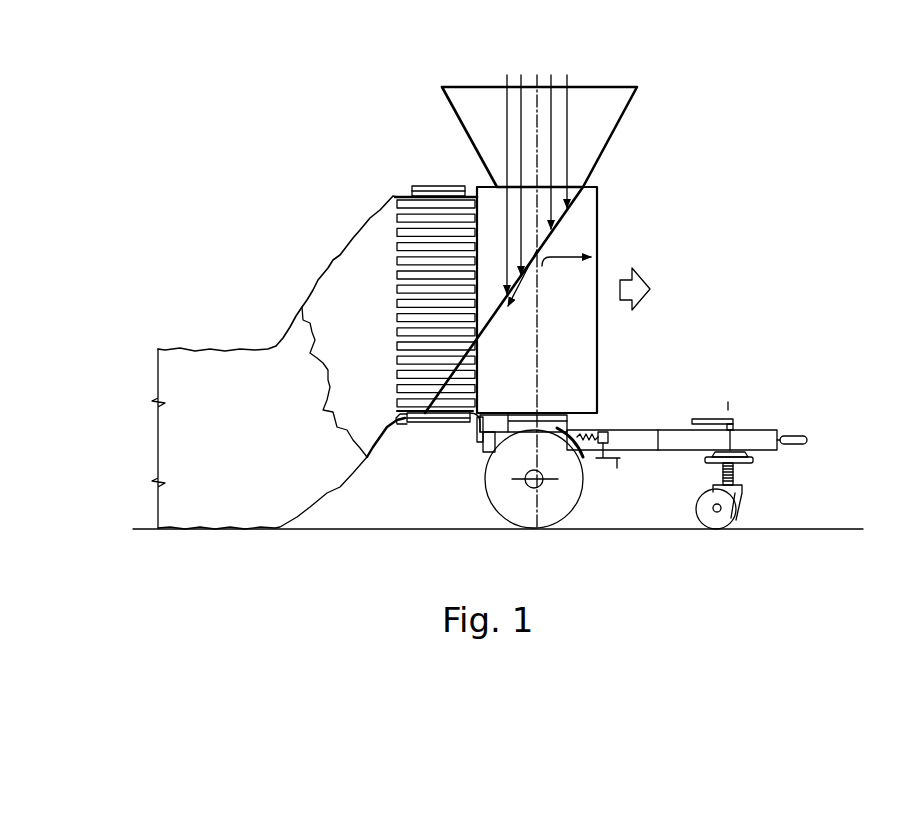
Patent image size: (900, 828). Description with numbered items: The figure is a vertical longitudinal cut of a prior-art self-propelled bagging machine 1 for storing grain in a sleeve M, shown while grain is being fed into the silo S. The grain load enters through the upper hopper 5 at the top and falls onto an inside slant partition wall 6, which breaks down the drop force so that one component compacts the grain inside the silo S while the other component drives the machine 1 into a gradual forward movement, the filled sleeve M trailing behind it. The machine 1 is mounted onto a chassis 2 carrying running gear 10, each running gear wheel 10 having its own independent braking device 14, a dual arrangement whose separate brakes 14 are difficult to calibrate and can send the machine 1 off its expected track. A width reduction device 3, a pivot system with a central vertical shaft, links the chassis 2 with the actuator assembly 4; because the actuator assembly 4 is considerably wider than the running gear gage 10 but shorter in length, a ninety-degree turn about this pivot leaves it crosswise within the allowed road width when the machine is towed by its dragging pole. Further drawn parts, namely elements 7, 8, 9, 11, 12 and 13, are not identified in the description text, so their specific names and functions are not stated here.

The self-propelled bagging machine 1 is at (632, 202).
The chassis 2 is at (779, 408).
The width reduction device 3 is at (568, 418).
The actuator assembly 4 is at (599, 338).
The upper hopper 5 is at (615, 130).
The inside slant partition wall 6 is at (540, 236).
The spreading rotor with blades 7 is at (382, 258).
The upper cover plate of rotor 8 is at (425, 213).
The lower guide lip 9 is at (475, 433).
The running gear 10 is at (507, 507).
The caster wheel 11 is at (737, 510).
The locking lever 12 is at (703, 419).
The height adjusting jack 13 is at (722, 468).
The braking device 14 is at (574, 455).
The sleeve M is at (330, 268).
The silo S is at (240, 336).